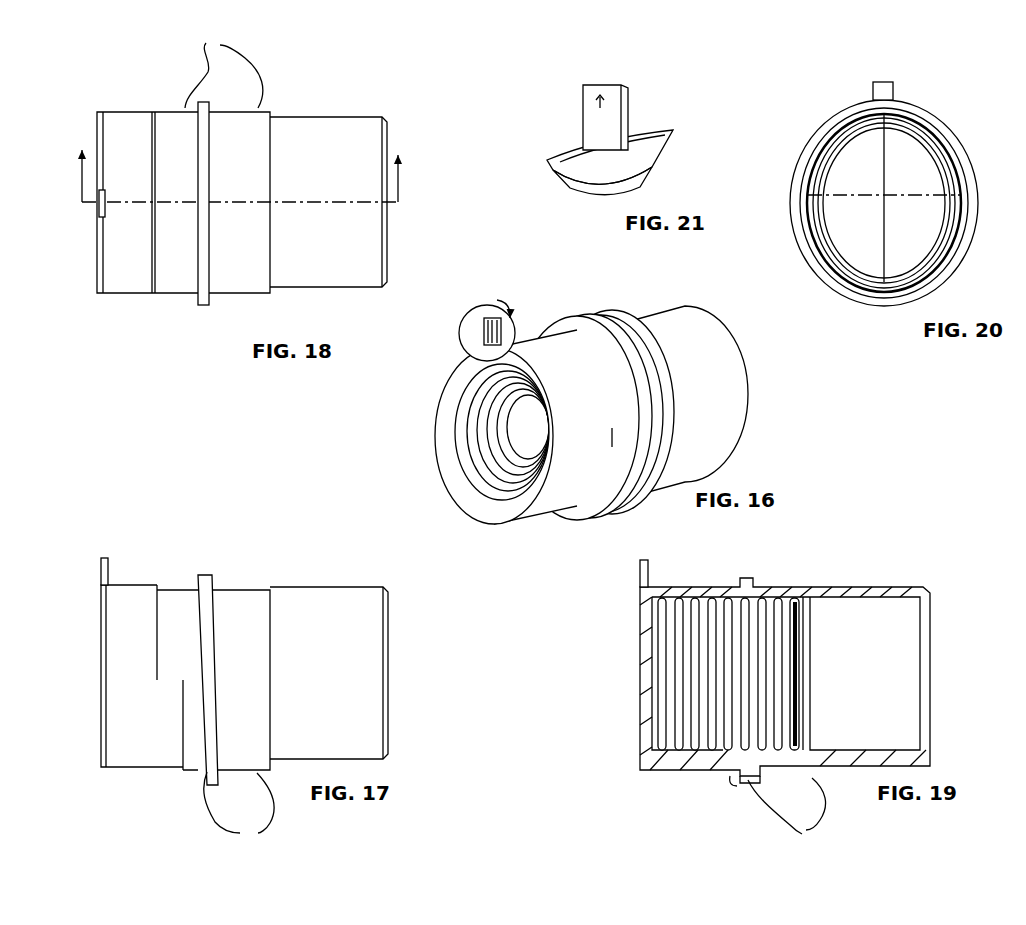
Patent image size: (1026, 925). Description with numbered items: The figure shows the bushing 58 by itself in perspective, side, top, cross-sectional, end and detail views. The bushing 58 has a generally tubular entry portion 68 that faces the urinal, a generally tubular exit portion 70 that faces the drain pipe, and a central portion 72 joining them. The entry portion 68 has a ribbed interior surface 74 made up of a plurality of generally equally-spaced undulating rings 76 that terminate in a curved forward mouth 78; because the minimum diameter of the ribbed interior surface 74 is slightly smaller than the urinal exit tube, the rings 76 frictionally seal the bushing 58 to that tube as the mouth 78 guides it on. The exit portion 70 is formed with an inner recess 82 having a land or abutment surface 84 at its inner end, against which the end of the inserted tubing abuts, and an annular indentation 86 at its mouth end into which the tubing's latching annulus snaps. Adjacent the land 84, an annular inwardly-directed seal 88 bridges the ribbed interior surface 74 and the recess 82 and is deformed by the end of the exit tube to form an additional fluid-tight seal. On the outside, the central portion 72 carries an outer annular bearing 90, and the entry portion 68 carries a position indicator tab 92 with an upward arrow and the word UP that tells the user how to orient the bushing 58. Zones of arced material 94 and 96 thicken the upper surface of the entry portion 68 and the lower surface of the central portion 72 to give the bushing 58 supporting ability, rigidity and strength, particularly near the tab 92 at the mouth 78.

In FIG. 18, the bushing 58 is at (338, 298).
In FIG. 17, the bushing 58 is at (258, 567).
In FIG. 16, the bushing 58 is at (758, 404).
In FIG. 19, the bushing 58 is at (861, 572).
In FIG. 20, the bushing 58 is at (796, 143).
In FIG. 21, the bushing 58 is at (562, 140).
In FIG. 18, the entry portion 68 is at (127, 297).
In FIG. 17, the entry portion 68 is at (128, 583).
In FIG. 16, the entry portion 68 is at (523, 529).
In FIG. 19, the entry portion 68 is at (638, 726).
In FIG. 21, the entry portion 68 is at (660, 165).
In FIG. 18, the exit portion 70 is at (391, 259).
In FIG. 17, the exit portion 70 is at (332, 585).
In FIG. 16, the exit portion 70 is at (680, 404).
In FIG. 19, the exit portion 70 is at (932, 588).
In FIG. 20, the exit portion 70 is at (863, 308).
In FIG. 18, the central portion 72 is at (202, 316).
In FIG. 17, the central portion 72 is at (224, 577).
In FIG. 16, the central portion 72 is at (588, 321).
In FIG. 19, the central portion 72 is at (788, 586).
In FIG. 18, the ribbed interior surface 74 is at (224, 72).
In FIG. 17, the ribbed interior surface 74 is at (244, 813).
In FIG. 16, the ribbed interior surface 74 is at (467, 435).
In FIG. 19, the ribbed interior surface 74 is at (678, 650).
In FIG. 19, the undulating rings 76 is at (753, 600).
In FIG. 17, the curved forward mouth 78 is at (100, 589).
In FIG. 16, the curved forward mouth 78 is at (443, 389).
In FIG. 19, the curved forward mouth 78 is at (652, 603).
In FIG. 21, the curved forward mouth 78 is at (572, 165).
In FIG. 19, the inner recess 82 is at (870, 597).
In FIG. 20, the inner recess 82 is at (835, 224).
In FIG. 19, the land or abutment surface 84 is at (808, 599).
In FIG. 20, the land or abutment surface 84 is at (898, 258).
In FIG. 19, the annular indentation 86 is at (920, 750).
In FIG. 19, the annular inwardly-directed seal 88 is at (812, 691).
In FIG. 18, the outer annular bearing 90 is at (208, 103).
In FIG. 17, the outer annular bearing 90 is at (217, 785).
In FIG. 16, the outer annular bearing 90 is at (560, 328).
In FIG. 19, the outer annular bearing 90 is at (759, 781).
In FIG. 20, the outer annular bearing 90 is at (933, 119).
In FIG. 18, the position indicator tab 92 is at (94, 228).
In FIG. 17, the position indicator tab 92 is at (104, 571).
In FIG. 16, the position indicator tab 92 is at (487, 326).
In FIG. 19, the position indicator tab 92 is at (641, 566).
In FIG. 20, the position indicator tab 92 is at (893, 86).
In FIG. 21, the position indicator tab 92 is at (628, 96).
In FIG. 18, the zone of arced material 94 is at (118, 268).
In FIG. 17, the zone of arced material 94 is at (143, 587).
In FIG. 19, the zone of arced material 94 is at (668, 587).
In FIG. 17, the zone of arced material 96 is at (193, 777).
In FIG. 19, the zone of arced material 96 is at (732, 784).